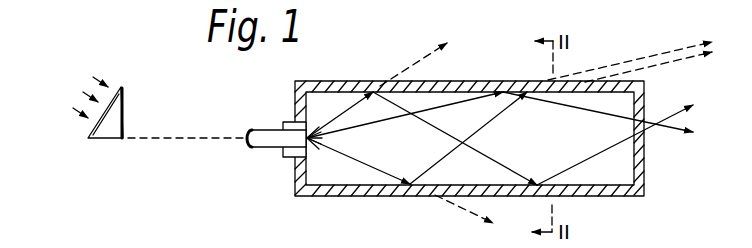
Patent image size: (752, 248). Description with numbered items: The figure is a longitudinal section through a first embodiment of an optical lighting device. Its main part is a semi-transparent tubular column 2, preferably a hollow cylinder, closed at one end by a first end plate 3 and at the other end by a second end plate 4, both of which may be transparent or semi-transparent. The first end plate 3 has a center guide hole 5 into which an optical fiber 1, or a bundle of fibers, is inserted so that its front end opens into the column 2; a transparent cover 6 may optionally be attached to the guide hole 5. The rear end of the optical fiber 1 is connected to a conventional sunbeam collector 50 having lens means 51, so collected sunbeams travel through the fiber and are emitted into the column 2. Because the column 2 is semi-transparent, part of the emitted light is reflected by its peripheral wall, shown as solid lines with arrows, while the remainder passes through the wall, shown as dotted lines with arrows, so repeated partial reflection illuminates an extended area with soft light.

The optical fiber 1 is at (268, 129).
The semi-transparent tubular column 2 is at (481, 89).
The first end plate 3 is at (299, 99).
The second end plate 4 is at (644, 166).
The center guide hole 5 is at (283, 152).
The transparent cover 6 is at (313, 141).
The sunbeam collector 50 is at (128, 115).
The lens means 51 is at (121, 85).